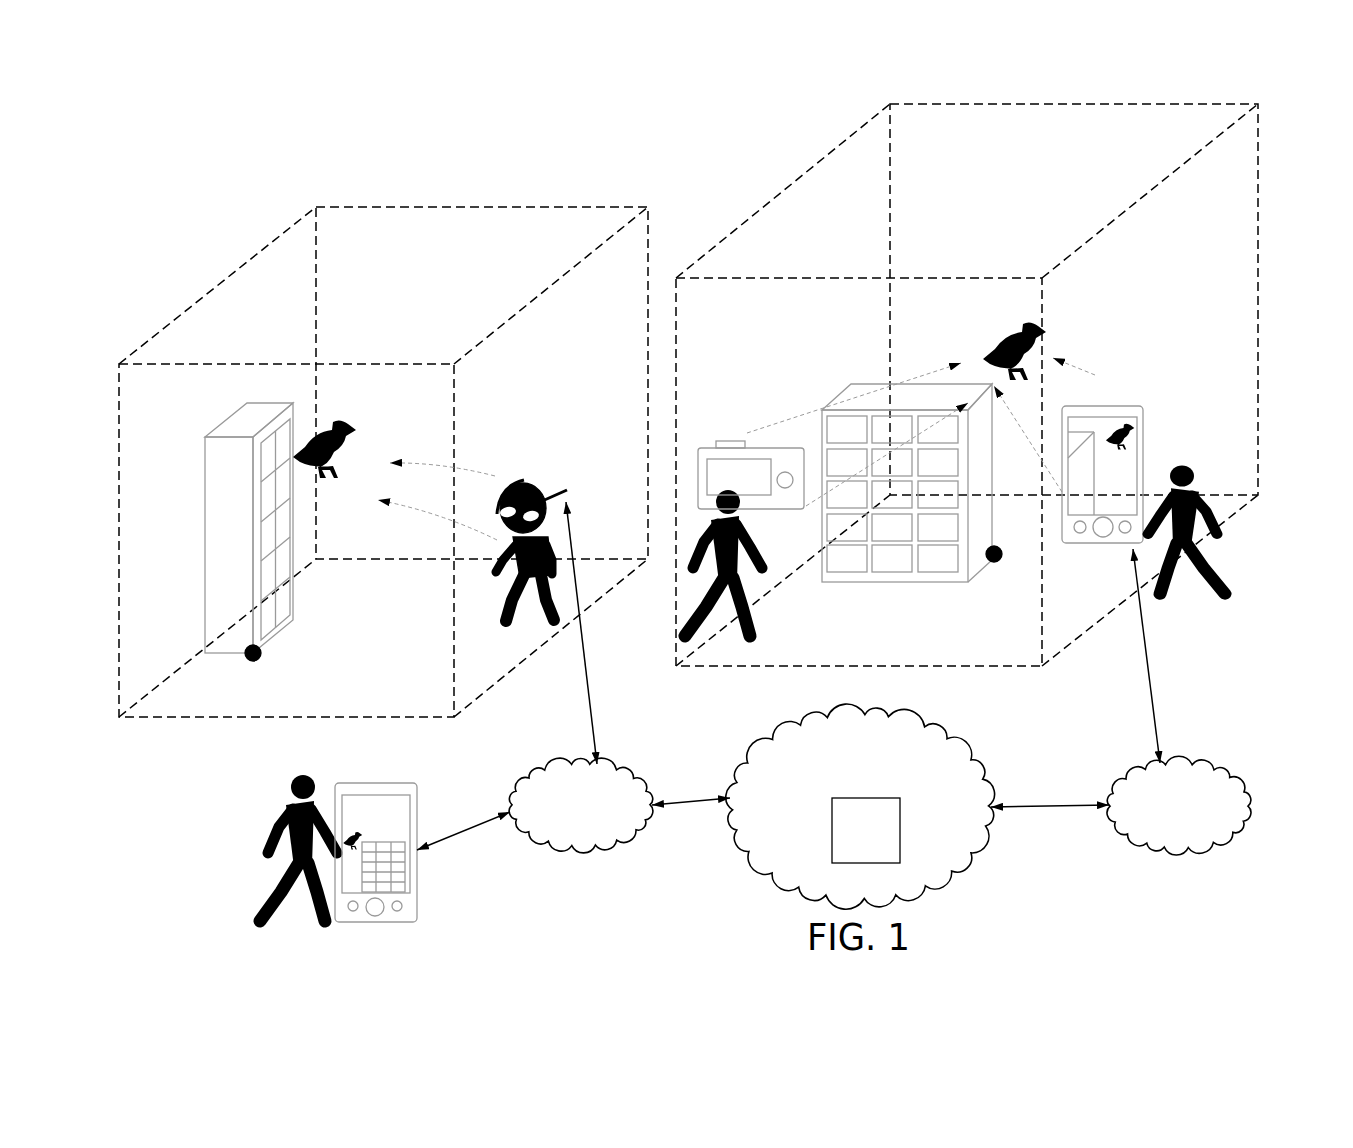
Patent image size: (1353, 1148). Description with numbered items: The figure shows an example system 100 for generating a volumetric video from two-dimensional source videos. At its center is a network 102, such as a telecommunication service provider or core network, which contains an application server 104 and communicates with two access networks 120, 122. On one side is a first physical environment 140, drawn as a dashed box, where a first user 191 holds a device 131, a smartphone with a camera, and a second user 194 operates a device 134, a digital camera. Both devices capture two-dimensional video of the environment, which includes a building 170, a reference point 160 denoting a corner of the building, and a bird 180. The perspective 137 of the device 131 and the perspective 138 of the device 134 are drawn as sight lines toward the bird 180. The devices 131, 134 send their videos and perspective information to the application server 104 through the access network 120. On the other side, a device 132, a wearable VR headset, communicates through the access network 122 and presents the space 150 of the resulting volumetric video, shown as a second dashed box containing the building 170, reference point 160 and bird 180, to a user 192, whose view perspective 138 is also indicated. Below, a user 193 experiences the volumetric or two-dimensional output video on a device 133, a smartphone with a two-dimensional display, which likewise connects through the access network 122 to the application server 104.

The system 100 is at (136, 76).
The space 150 is at (580, 207).
The first physical environment 140 is at (1258, 298).
The building 170 is at (287, 627).
The reference point 160 is at (260, 660).
The bird 180 is at (342, 422).
The perspective 138 is at (494, 476).
The device 132 is at (567, 490).
The user 192 is at (563, 625).
The second user 194 is at (695, 603).
The device 134 is at (705, 438).
The perspective 137 is at (1083, 372).
The device 131 is at (1112, 551).
The first user 191 is at (1225, 593).
The user 193 is at (260, 913).
The device 133 is at (417, 870).
The access network 122 is at (563, 841).
The network 102 is at (845, 788).
The application server 104 is at (849, 855).
The access network 120 is at (1163, 841).